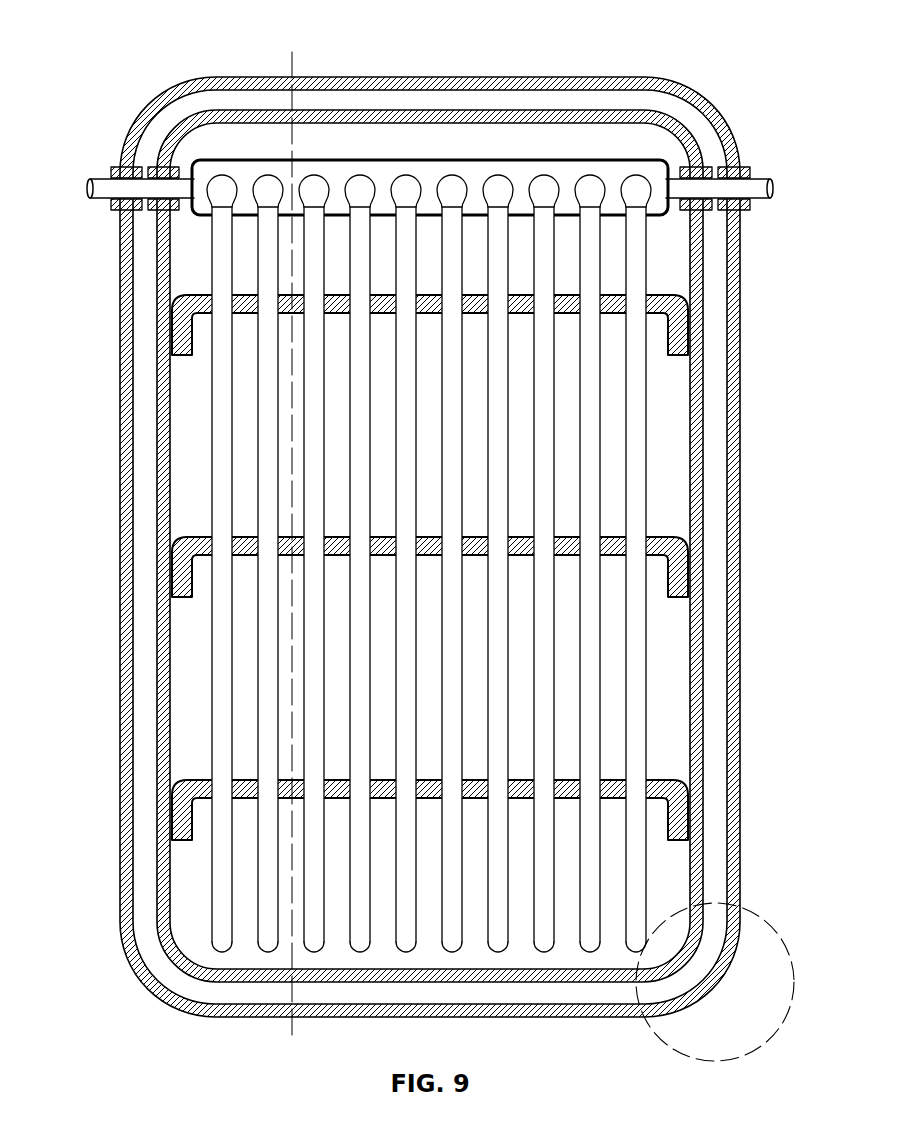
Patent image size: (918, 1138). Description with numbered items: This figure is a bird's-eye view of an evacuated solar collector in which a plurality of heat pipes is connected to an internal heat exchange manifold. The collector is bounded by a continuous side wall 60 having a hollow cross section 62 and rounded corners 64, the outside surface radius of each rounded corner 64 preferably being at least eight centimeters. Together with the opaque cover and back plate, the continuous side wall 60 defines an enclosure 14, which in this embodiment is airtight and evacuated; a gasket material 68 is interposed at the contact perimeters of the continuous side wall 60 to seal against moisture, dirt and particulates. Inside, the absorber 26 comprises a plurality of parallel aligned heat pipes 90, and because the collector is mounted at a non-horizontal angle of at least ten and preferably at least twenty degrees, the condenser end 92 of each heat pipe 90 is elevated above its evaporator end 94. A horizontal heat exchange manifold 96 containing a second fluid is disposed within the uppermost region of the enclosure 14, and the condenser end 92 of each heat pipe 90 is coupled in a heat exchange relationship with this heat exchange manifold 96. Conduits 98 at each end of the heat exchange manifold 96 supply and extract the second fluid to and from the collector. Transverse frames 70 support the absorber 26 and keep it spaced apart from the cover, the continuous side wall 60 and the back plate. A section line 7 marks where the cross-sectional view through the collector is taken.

The continuous side wall 60 is at (430, 511).
The hollow cross section 62 is at (421, 109).
The rounded corners 64 is at (673, 920).
The enclosure 14 is at (334, 154).
The condenser end 92 is at (214, 196).
The heat pipes 90 is at (360, 517).
The evaporator end 94 is at (261, 935).
The heat exchange manifold 96 is at (527, 178).
The conduits 98 is at (100, 198).
The gasket material 68 is at (150, 168).
The transverse frames 70 is at (205, 294).
The absorber 26 is at (477, 357).
The section line 7- 7 is at (292, 52).